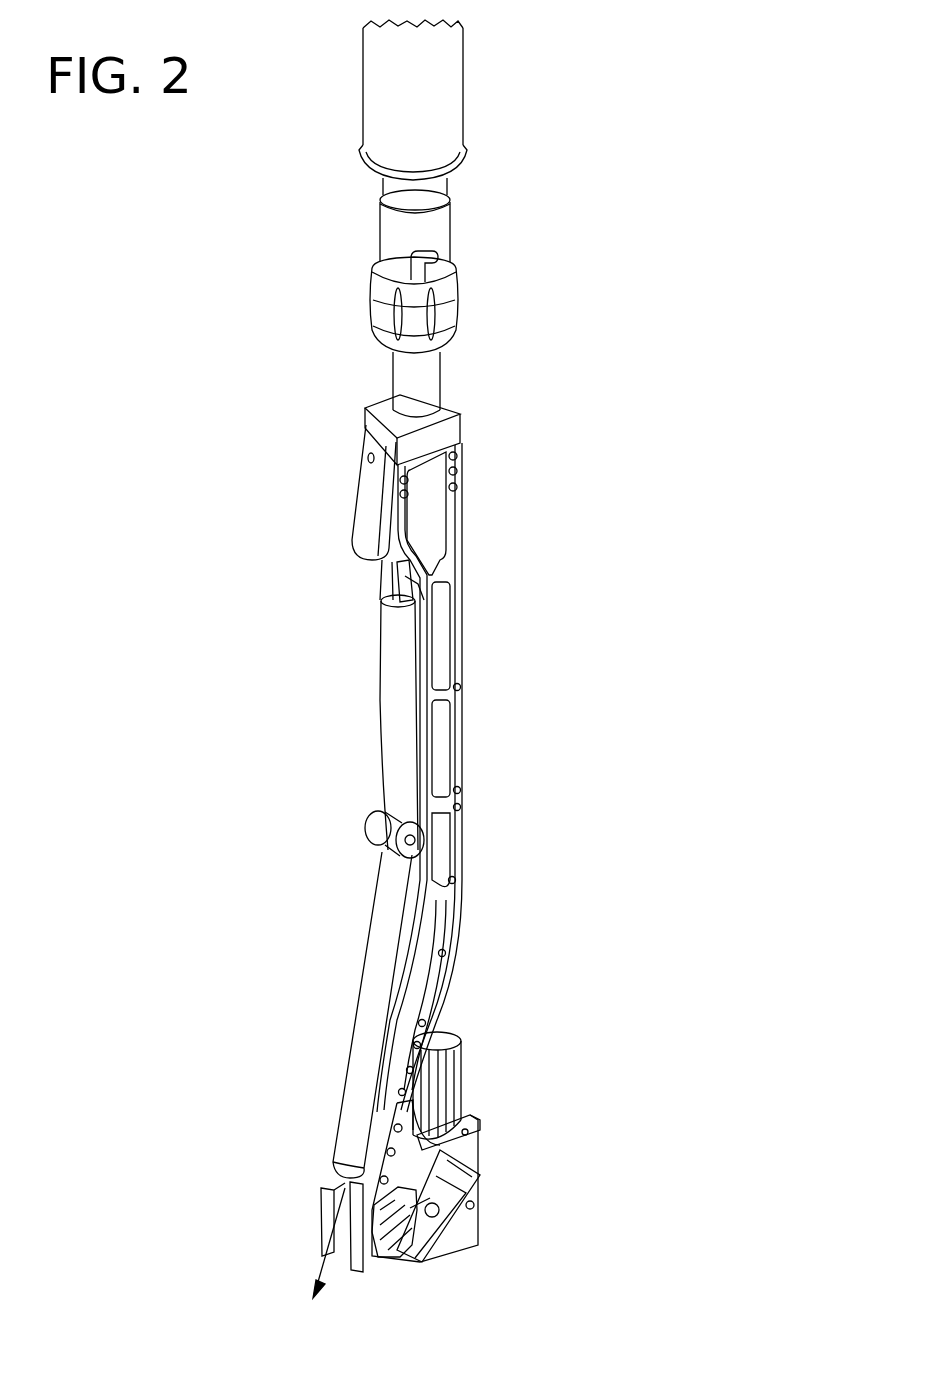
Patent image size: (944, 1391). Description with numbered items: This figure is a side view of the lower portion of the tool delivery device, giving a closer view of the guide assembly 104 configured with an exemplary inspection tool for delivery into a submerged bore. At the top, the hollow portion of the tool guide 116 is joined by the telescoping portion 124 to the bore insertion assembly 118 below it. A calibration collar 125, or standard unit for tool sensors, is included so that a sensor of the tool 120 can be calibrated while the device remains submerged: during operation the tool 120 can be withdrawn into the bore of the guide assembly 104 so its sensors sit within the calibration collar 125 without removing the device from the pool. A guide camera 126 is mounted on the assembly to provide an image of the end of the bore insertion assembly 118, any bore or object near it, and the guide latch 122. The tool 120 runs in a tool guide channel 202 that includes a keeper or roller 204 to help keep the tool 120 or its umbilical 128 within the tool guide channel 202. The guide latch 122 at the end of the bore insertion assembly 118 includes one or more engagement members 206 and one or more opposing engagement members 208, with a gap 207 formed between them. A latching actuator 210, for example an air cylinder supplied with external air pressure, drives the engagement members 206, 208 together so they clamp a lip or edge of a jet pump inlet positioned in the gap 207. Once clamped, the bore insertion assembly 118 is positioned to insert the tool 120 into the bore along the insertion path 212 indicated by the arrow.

The guide assembly 104 is at (580, 175).
The tool guide 116 is at (465, 94).
The telescoping portion 124 is at (455, 172).
The calibration collar 125 is at (460, 296).
The bore insertion assembly 118 is at (464, 848).
The guide camera 126 is at (360, 507).
The umbilical 128 is at (400, 574).
The tool guide channel 202 is at (425, 577).
The tool 120 is at (384, 722).
The roller 204 is at (366, 822).
The latching actuator 210 is at (465, 1062).
The guide latch 122 is at (480, 1213).
The opposing engagement member 208 is at (407, 1260).
The gap 207 is at (377, 1256).
The engagement member 206 is at (360, 1272).
The insertion path 212 is at (316, 1242).